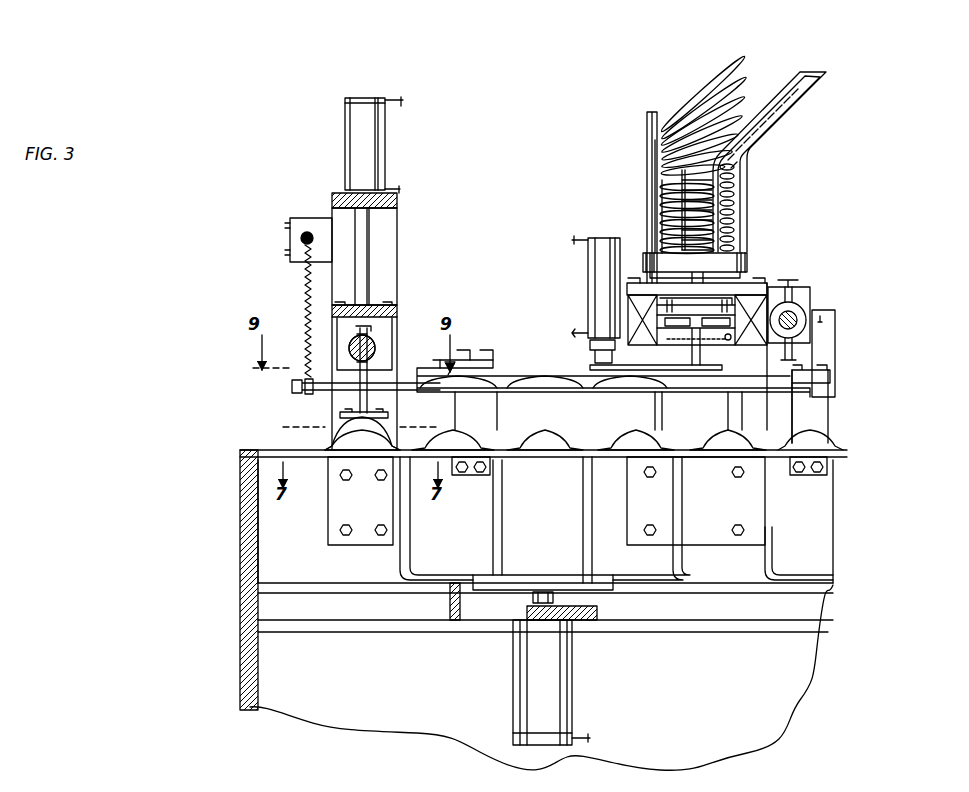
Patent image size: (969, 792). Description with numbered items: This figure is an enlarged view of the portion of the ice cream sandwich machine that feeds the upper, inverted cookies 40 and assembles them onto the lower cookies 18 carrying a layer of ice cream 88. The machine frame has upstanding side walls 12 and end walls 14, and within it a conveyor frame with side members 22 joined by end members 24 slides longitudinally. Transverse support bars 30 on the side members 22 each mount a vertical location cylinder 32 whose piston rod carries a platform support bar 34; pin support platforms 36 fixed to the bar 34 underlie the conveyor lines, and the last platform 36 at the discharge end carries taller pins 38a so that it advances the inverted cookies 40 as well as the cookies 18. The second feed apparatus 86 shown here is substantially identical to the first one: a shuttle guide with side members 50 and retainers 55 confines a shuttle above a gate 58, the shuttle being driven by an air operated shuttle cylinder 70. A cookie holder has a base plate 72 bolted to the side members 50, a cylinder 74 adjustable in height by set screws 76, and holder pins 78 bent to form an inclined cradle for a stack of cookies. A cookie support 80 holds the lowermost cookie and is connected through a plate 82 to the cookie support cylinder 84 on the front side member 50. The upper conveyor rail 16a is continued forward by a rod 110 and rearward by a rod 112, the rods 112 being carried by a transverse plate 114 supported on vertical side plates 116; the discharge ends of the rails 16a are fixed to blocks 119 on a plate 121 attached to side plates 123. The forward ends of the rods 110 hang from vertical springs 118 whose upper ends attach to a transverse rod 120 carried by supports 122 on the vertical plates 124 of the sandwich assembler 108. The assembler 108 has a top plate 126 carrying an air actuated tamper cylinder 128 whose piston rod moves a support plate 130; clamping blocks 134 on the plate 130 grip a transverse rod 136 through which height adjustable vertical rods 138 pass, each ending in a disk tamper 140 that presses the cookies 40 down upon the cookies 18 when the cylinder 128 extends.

The side walls 12 is at (415, 715).
The end walls 14 is at (240, 553).
The conveyor rail 16a is at (525, 372).
The cookie 18 is at (572, 452).
The side members 22 is at (662, 608).
The end members 24 is at (450, 605).
The support bars 30 is at (570, 615).
The location cylinder 32 is at (572, 700).
The platform support bar 34 is at (512, 610).
The pin support platform 36 is at (532, 575).
The pins 38a is at (410, 520).
The cookies 40 is at (745, 75).
The side members 50 is at (797, 282).
The retainers 55 is at (630, 300).
The gate 58 is at (728, 340).
The shuttle cylinder 70 is at (835, 347).
The base plate 72 is at (748, 290).
The cylinder 74 is at (748, 255).
The set screws 76 is at (707, 252).
The holder pins 78 is at (812, 88).
The cookie support 80 is at (680, 310).
The plate 82 is at (728, 425).
The cookie support cylinder 84 is at (600, 245).
The second feed apparatus 86 is at (645, 130).
The ice cream 88 is at (658, 430).
The sandwich assembler 108 is at (345, 272).
The rod 110 is at (320, 388).
The rod 112 is at (828, 405).
The plate 114 is at (817, 372).
The side plates 116 is at (825, 433).
The springs 118 is at (305, 272).
The blocks 119 is at (470, 358).
The rod 120 is at (300, 238).
The plate 121 is at (497, 367).
The supports 122 is at (300, 218).
The side plates 123 is at (490, 410).
The vertical plates 124 is at (330, 516).
The top plate 126 is at (400, 200).
The tamper cylinder 128 is at (376, 148).
The support plate 130 is at (398, 295).
The clamping blocks 134 is at (378, 346).
The rod 136 is at (352, 345).
The vertical rods 138 is at (358, 402).
The tamper 140 is at (395, 418).